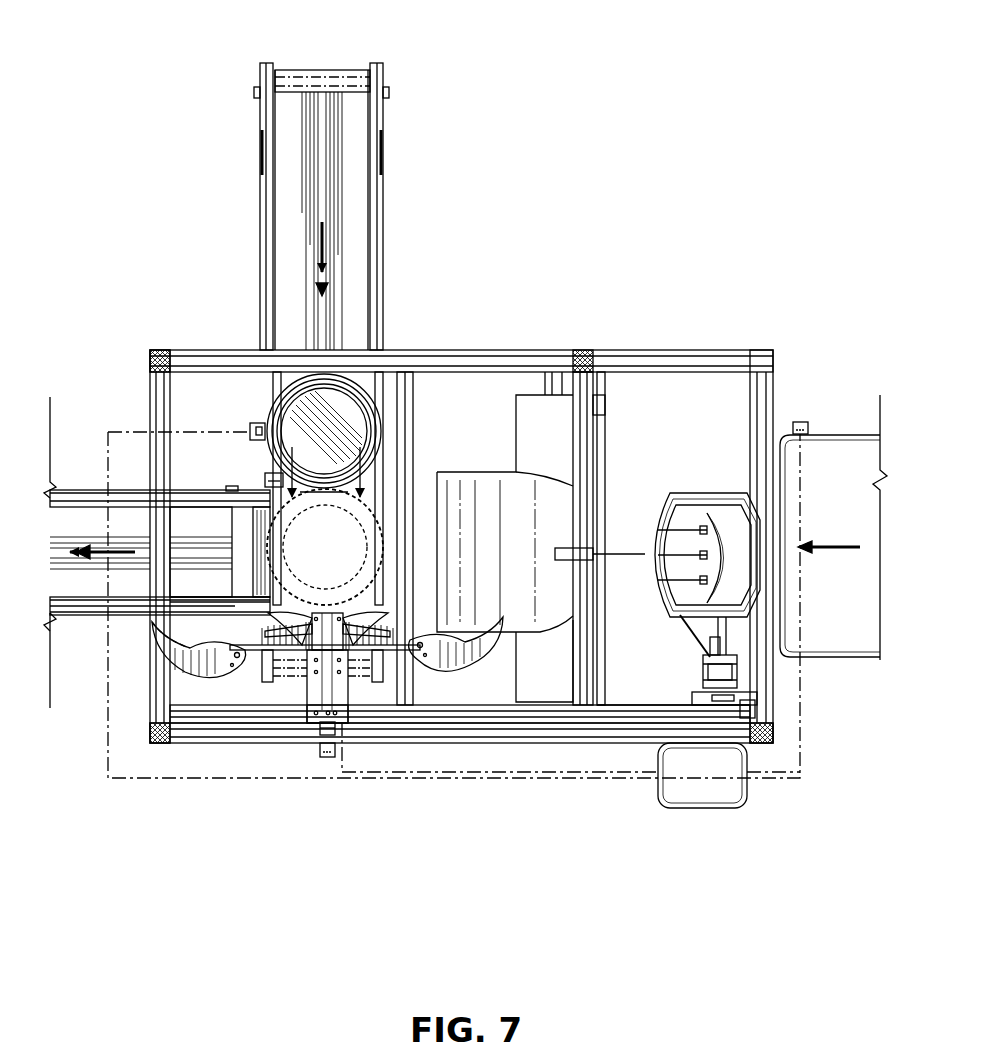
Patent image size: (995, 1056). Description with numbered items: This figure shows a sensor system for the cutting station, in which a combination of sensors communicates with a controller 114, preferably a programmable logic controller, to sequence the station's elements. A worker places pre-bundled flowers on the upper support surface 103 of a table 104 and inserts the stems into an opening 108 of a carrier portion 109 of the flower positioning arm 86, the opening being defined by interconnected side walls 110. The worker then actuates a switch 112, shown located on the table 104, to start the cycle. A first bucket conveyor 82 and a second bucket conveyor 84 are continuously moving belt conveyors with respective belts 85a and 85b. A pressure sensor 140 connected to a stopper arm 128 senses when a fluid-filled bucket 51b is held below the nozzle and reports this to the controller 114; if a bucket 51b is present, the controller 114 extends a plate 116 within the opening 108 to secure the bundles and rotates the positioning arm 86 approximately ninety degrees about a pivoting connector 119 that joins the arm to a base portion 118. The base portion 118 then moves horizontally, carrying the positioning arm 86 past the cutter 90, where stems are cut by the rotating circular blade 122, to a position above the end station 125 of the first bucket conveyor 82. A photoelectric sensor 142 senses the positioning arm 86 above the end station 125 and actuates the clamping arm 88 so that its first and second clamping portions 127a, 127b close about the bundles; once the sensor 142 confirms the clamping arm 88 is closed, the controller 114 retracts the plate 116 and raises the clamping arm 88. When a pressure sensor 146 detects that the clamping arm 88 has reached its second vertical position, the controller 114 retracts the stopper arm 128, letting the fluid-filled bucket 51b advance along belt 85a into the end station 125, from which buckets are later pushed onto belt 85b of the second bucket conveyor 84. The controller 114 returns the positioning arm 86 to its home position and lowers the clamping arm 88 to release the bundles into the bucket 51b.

The first bucket conveyor 82 is at (243, 147).
The belt of the first bucket conveyor 85a is at (355, 107).
The second bucket conveyor 84 is at (88, 462).
The belt of the second bucket conveyor 85b is at (80, 600).
The bucket 51b is at (380, 437).
The pressure sensor 140 is at (250, 431).
The stopper arm 128 is at (265, 480).
The end station 125 is at (285, 607).
The first clamping portion 127a is at (455, 670).
The second clamping portion 127b is at (208, 668).
The clamping arm 88 is at (283, 697).
The pressure sensor 146 is at (318, 728).
The photoelectric sensor 142 is at (328, 760).
The cutter 90 is at (500, 490).
The rotating circular blade 122 is at (605, 535).
The flower positioning arm 86 is at (655, 500).
The carrier portion 109 is at (668, 490).
The side walls 110 is at (720, 505).
The plate 116 is at (705, 563).
The opening 108 is at (685, 577).
The pivoting connector 119 is at (706, 640).
The base portion 118 is at (700, 667).
The switch 112 is at (800, 422).
The upper support surface 103 is at (851, 602).
The table 104 is at (835, 660).
The controller 114 is at (707, 810).